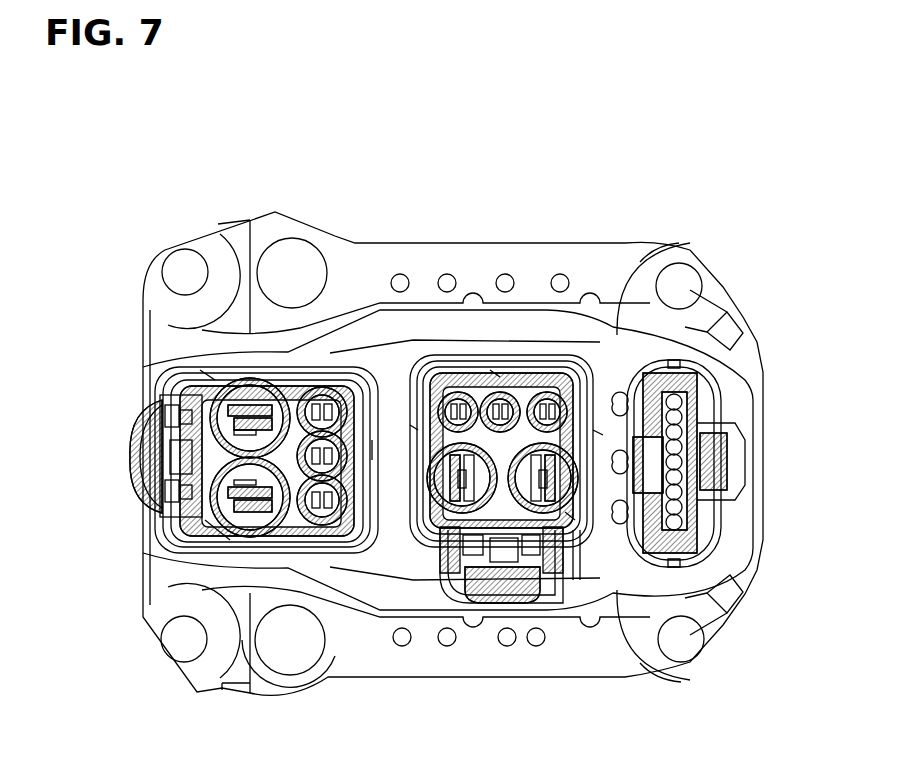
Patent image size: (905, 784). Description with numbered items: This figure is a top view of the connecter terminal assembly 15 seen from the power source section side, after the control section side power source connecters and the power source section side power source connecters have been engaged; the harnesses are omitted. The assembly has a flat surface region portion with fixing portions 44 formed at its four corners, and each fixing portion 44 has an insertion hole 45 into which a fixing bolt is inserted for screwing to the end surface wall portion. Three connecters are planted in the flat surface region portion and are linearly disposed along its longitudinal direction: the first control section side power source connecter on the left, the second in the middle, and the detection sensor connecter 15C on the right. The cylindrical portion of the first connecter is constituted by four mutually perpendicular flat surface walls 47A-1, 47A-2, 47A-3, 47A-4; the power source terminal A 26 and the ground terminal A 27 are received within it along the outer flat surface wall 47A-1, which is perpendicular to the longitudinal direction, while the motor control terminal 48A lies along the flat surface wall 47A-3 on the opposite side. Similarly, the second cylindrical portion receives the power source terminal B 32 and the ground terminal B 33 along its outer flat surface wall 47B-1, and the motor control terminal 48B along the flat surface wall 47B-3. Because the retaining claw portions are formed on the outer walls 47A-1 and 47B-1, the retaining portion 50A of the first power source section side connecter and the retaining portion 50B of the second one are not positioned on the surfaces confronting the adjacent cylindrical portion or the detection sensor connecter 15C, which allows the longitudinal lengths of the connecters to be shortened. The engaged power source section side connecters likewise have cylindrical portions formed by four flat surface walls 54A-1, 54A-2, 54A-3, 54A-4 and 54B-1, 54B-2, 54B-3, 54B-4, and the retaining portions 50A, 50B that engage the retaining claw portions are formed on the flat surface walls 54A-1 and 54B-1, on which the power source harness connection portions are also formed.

The connecter terminal assembly 15 is at (767, 548).
The detection sensor connecter 15C is at (710, 403).
The power source terminal A 26 is at (250, 410).
The ground terminal A 27 is at (252, 503).
The power source terminal B 32 is at (462, 507).
The ground terminal B 33 is at (540, 507).
The fixing portion 44 is at (677, 250).
The insertion hole 45 is at (690, 284).
The outer flat surface wall 47A-1 is at (205, 520).
The flat surface wall 47A-2 is at (287, 542).
The flat surface wall 47A-3 is at (362, 530).
The flat surface wall 47A-4 is at (283, 372).
The outer flat surface wall 47B-1 is at (573, 540).
The flat surface wall 47B-3 is at (530, 377).
The motor control terminal 48A is at (325, 500).
The motor control terminal 48B is at (540, 400).
The retaining portion 50A is at (130, 458).
The retaining portion 50B is at (497, 607).
The flat surface wall 54A-1 is at (173, 387).
The flat surface wall 54A-2 is at (223, 543).
The flat surface wall 54A-3 is at (372, 447).
The flat surface wall 54A-4 is at (207, 373).
The flat surface wall 54B-1 is at (570, 577).
The flat surface wall 54B-2 is at (603, 435).
The flat surface wall 54B-3 is at (497, 377).
The flat surface wall 54B-4 is at (410, 430).